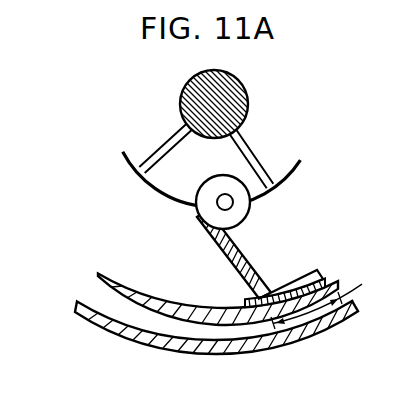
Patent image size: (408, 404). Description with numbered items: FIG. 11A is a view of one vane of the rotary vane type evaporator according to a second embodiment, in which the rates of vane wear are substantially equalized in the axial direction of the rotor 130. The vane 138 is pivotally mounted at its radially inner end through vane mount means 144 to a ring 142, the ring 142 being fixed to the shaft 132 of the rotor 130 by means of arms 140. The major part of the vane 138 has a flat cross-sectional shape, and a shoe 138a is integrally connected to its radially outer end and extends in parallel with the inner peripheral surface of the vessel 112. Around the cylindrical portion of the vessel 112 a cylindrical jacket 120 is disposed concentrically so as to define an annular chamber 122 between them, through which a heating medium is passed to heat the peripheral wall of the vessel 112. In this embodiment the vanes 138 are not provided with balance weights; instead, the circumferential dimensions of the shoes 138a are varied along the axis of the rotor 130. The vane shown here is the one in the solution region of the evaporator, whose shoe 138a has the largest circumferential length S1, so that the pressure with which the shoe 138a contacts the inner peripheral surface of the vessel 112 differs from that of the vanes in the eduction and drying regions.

The rotor 130 is at (175, 106).
The shaft 132 is at (246, 94).
The arms 140 is at (250, 148).
The ring 142 is at (154, 189).
The vane mount means 144 is at (247, 212).
The vane 138 is at (231, 262).
The shoe 138a is at (307, 277).
The vessel 112 is at (135, 293).
The annular chamber 122 is at (94, 294).
The cylindrical jacket 120 is at (115, 326).
The largest circumferential length S1 is at (309, 317).